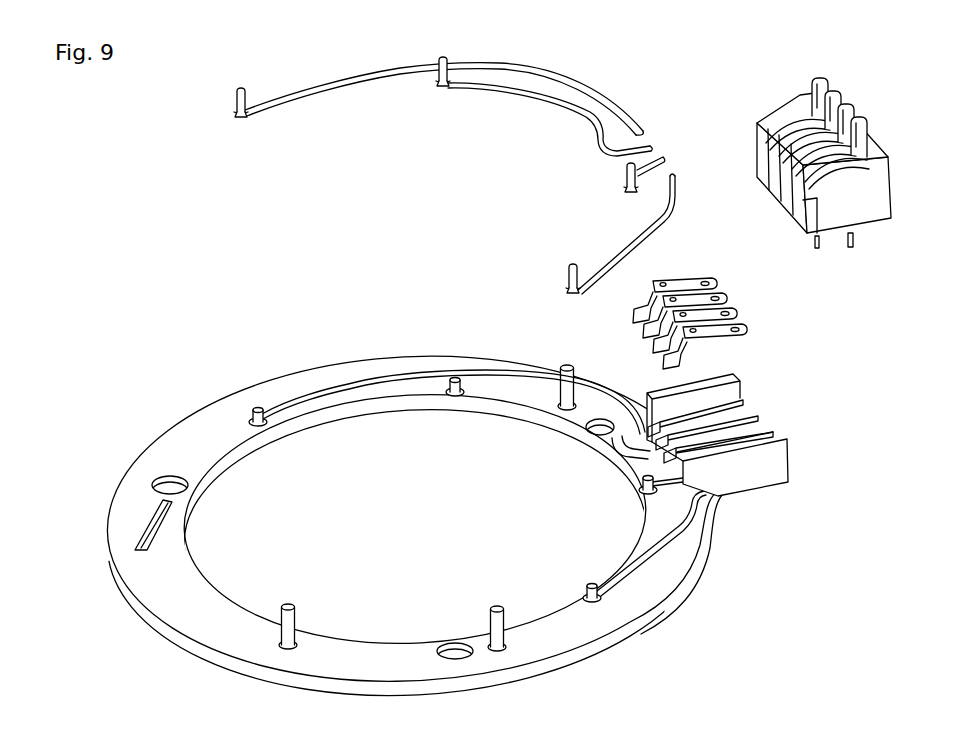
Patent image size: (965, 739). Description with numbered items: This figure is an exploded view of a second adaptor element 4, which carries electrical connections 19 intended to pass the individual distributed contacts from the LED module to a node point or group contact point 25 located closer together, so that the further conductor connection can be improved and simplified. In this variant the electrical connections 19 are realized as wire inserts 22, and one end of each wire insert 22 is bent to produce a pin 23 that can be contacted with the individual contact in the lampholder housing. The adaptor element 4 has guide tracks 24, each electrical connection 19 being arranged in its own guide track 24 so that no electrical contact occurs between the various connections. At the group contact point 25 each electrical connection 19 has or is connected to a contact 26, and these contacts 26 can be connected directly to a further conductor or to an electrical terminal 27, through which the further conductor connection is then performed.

The adaptor element 4 is at (195, 613).
The electrical connections 19 is at (460, 178).
The wire inserts 22 is at (617, 258).
The pin 23 is at (567, 282).
The guide tracks 24 is at (638, 477).
The group contact point 25 is at (800, 389).
The contact 26 is at (747, 323).
The electrical terminal 27 is at (865, 192).